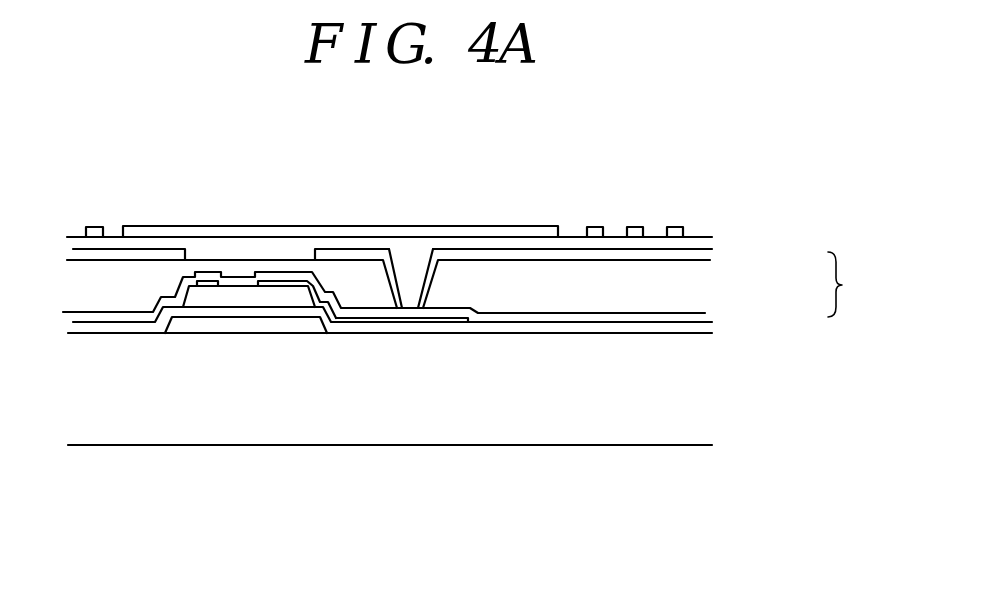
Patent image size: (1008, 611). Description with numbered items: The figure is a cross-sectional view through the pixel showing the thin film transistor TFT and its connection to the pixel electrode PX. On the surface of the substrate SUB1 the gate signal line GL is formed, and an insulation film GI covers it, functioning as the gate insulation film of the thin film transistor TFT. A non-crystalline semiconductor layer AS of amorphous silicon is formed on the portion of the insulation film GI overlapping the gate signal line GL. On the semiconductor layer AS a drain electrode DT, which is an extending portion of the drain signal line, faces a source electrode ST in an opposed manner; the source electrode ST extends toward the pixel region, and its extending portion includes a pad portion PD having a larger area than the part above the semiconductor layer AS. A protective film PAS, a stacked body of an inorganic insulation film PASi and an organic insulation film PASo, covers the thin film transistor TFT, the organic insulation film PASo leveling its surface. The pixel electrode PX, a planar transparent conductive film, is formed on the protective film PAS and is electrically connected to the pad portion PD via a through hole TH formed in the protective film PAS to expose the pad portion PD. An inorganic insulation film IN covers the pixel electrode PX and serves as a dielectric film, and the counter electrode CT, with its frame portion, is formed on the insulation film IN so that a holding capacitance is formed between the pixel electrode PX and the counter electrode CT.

The counter electrode CT is at (92, 227).
The drain electrode DT is at (207, 278).
The semiconductor layer AS is at (247, 300).
The source electrode ST is at (292, 282).
The through hole TH is at (430, 277).
The pixel electrode PX is at (572, 252).
The insulation film IN is at (702, 243).
The organic insulation film PASo is at (678, 280).
The inorganic insulation film PASi is at (698, 317).
The protective film PAS is at (862, 284).
The thin film transistor TFT is at (146, 358).
The gate signal line GL is at (207, 327).
The substrate SUB1 is at (293, 420).
The pad portion PD is at (415, 328).
The insulation film GI is at (593, 327).